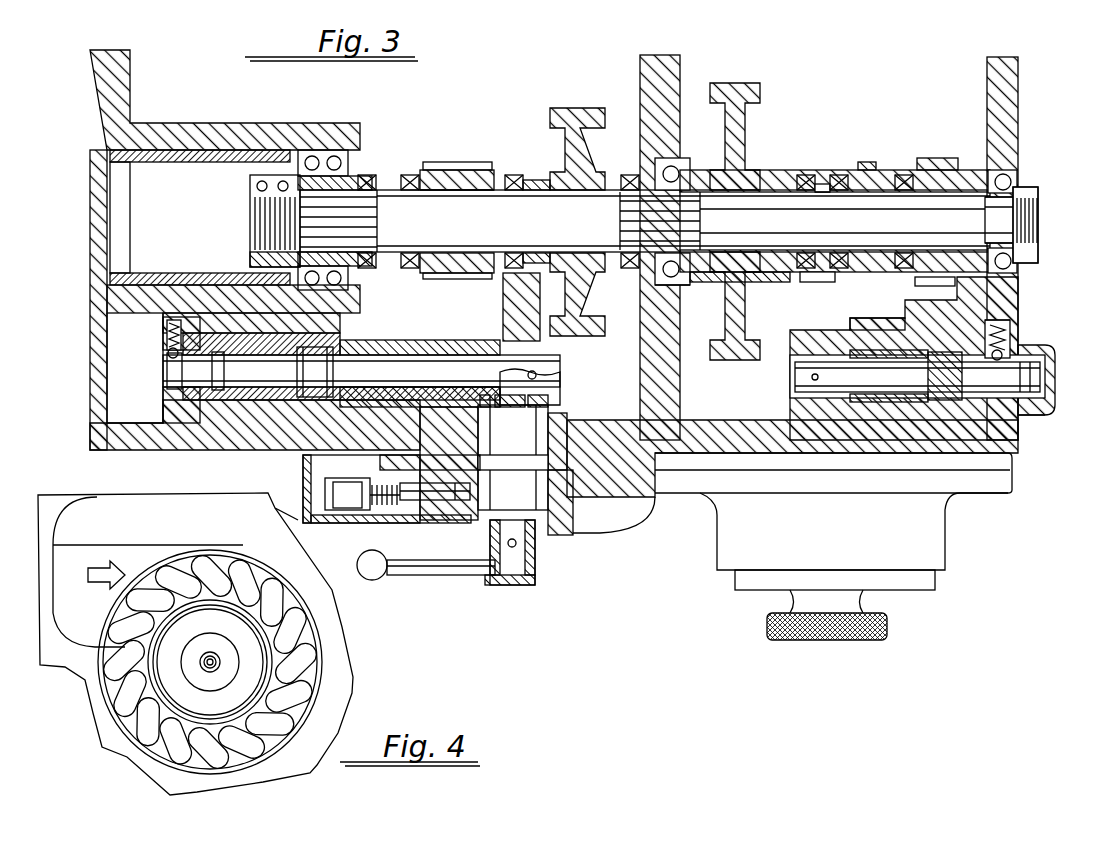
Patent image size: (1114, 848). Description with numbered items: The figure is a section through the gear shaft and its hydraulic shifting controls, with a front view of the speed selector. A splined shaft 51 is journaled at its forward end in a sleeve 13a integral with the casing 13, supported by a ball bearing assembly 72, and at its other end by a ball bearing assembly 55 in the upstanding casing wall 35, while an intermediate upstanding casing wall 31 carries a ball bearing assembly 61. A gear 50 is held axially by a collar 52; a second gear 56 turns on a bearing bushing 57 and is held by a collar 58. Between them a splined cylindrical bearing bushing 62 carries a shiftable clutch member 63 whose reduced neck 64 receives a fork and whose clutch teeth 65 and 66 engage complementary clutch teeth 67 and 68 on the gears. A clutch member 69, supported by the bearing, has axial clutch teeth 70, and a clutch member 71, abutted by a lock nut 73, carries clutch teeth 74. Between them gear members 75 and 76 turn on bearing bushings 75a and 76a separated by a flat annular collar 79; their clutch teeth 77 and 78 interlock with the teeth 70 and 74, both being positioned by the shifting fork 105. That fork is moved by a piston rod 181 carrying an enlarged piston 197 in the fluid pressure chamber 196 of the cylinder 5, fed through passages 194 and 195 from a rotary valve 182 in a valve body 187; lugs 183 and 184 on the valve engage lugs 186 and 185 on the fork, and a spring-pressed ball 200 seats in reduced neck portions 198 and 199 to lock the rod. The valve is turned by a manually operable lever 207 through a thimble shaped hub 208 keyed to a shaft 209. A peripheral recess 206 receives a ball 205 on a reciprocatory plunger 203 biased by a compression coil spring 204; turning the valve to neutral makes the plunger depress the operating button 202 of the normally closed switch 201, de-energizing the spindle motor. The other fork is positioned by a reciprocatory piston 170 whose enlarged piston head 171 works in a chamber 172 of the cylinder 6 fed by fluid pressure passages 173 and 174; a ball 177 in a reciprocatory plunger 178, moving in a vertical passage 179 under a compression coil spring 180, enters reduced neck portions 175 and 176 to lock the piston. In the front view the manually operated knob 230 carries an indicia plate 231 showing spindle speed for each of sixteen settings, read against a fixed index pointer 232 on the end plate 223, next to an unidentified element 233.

In FIG. 3, the sleeve 13a is at (258, 128).
In FIG. 3, the ball bearing assembly 72 is at (326, 163).
In FIG. 3, the clutch member 71 is at (366, 172).
In FIG. 3, the clutch teeth 74 is at (372, 175).
In FIG. 3, the clutch teeth 78 is at (415, 175).
In FIG. 3, the gear member 76 is at (458, 165).
In FIG. 3, the bearing bushing 76a is at (468, 188).
In FIG. 3, the flat annular collar 79 is at (516, 172).
In FIG. 3, the bearing bushing 75a is at (542, 180).
In FIG. 3, the gear member 75 is at (567, 118).
In FIG. 3, the clutch teeth 77 is at (632, 175).
In FIG. 3, the clutch teeth 70 is at (625, 270).
In FIG. 3, the intermediate upstanding casing wall 31 is at (668, 88).
In FIG. 3, the ball bearing assembly 61 is at (672, 160).
In FIG. 3, the second gear 56 is at (750, 100).
In FIG. 3, the clutch teeth 66 is at (836, 170).
In FIG. 3, the clutch teeth 68 is at (800, 172).
In FIG. 3, the cylindrical bearing bushing 62 is at (823, 184).
In FIG. 3, the clutch member 63 is at (854, 156).
In FIG. 3, the reduced neck 64 is at (866, 163).
In FIG. 3, the clutch teeth 67 is at (922, 128).
In FIG. 3, the clutch teeth 65 is at (900, 272).
In FIG. 3, the collar 52 is at (924, 158).
In FIG. 3, the gear 50 is at (952, 165).
In FIG. 3, the upstanding casing wall 35 is at (1018, 120).
In FIG. 3, the ball bearing assembly 55 is at (1012, 178).
In FIG. 3, the shaft 51 is at (980, 225).
In FIG. 3, the lock nut 73 is at (260, 185).
In FIG. 3, the enlarged piston 197 is at (330, 345).
In FIG. 3, the cylinder 5 is at (417, 340).
In FIG. 3, the piston rod 181 is at (445, 360).
In FIG. 3, the shifting fork 105 is at (857, 318).
In FIG. 3, the clutch member 69 is at (688, 285).
In FIG. 3, the bearing bushing 57 is at (780, 272).
In FIG. 3, the collar 58 is at (805, 272).
In FIG. 3, the enlarged piston head 171 is at (935, 352).
In FIG. 3, the chamber 172 is at (908, 352).
In FIG. 3, the cylinder 6 is at (955, 350).
In FIG. 3, the compression coil spring 180 is at (995, 335).
In FIG. 3, the vertical passage 179 is at (1005, 335).
In FIG. 3, the reciprocatory plunger 178 is at (1000, 345).
In FIG. 3, the ball 177 is at (1005, 357).
In FIG. 3, the reciprocatory piston 170 is at (1035, 378).
In FIG. 3, the reduced neck portion 176 is at (1045, 402).
In FIG. 3, the reduced neck portion 175 is at (1028, 420).
In FIG. 3, the fluid pressure passage 174 is at (1012, 462).
In FIG. 3, the fluid pressure passage 173 is at (900, 455).
In FIG. 3, the body 233 is at (935, 540).
In FIG. 3, the indicia plate 231 is at (937, 582).
In FIG. 4, the indicia plate 231 is at (310, 640).
In FIG. 3, the manually operated knob 230 is at (893, 628).
In FIG. 4, the manually operated knob 230 is at (250, 688).
In FIG. 3, the spring-pressed ball 200 is at (165, 355).
In FIG. 3, the reduced neck portion 199 is at (163, 395).
In FIG. 3, the reduced neck portion 198 is at (180, 392).
In FIG. 3, the passage 194 is at (220, 395).
In FIG. 3, the fluid pressure chamber 196 is at (285, 397).
In FIG. 3, the passage 195 is at (330, 468).
In FIG. 3, the lug 186 is at (560, 392).
In FIG. 3, the lug 184 is at (548, 406).
In FIG. 3, the rotary valve 182 is at (553, 412).
In FIG. 3, the lug 185 is at (498, 404).
In FIG. 3, the lug 183 is at (478, 420).
In FIG. 3, the valve body 187 is at (565, 440).
In FIG. 3, the peripheral recess 206 is at (490, 486).
In FIG. 3, the reciprocatory plunger 203 is at (440, 502).
In FIG. 3, the compression coil spring 204 is at (432, 510).
In FIG. 3, the ball 205 is at (468, 503).
In FIG. 3, the shaft 209 is at (535, 547).
In FIG. 3, the thimble shaped hub 208 is at (535, 570).
In FIG. 3, the manually operable lever 207 is at (405, 570).
In FIG. 3, the normally closed switch 201 is at (348, 510).
In FIG. 3, the operating button 202 is at (382, 505).
In FIG. 4, the casing 13 is at (66, 495).
In FIG. 4, the fixed index pointer 232 is at (97, 565).
In FIG. 4, the end plate 223 is at (282, 546).